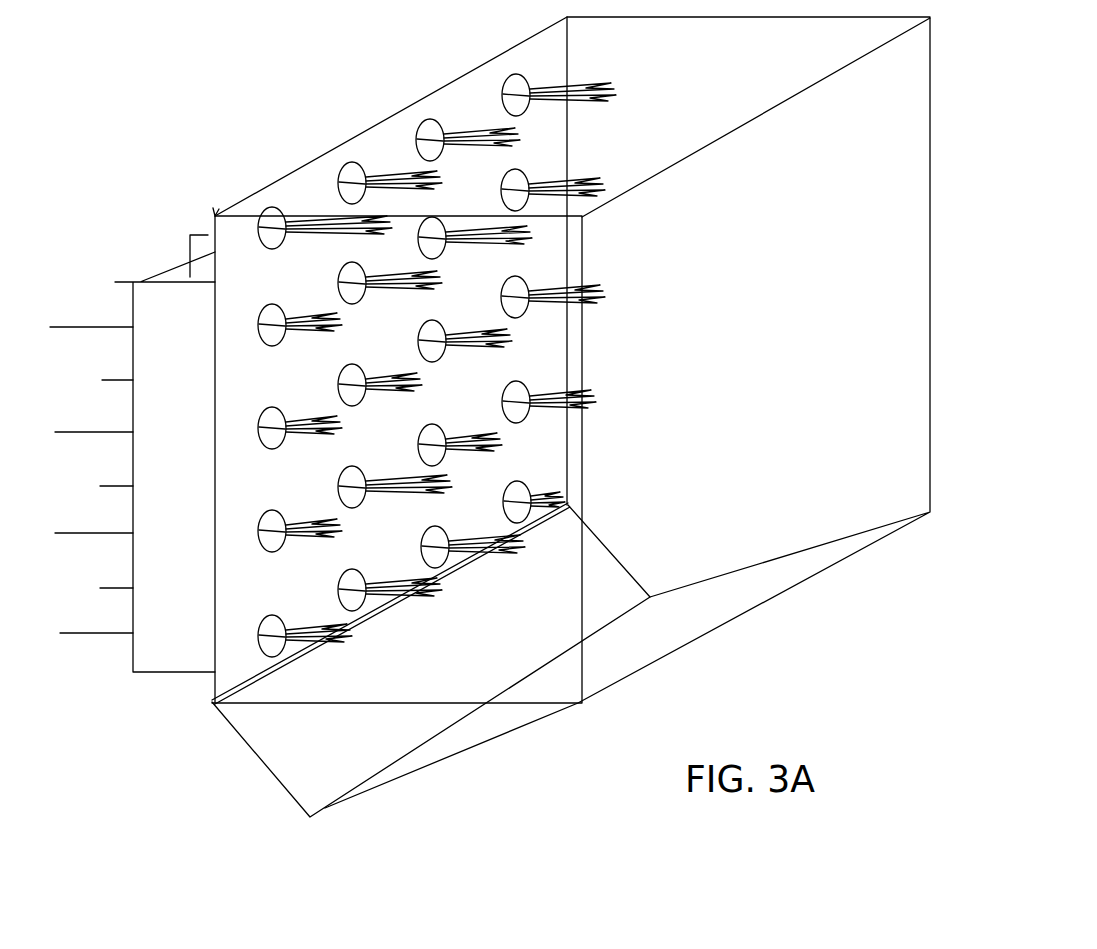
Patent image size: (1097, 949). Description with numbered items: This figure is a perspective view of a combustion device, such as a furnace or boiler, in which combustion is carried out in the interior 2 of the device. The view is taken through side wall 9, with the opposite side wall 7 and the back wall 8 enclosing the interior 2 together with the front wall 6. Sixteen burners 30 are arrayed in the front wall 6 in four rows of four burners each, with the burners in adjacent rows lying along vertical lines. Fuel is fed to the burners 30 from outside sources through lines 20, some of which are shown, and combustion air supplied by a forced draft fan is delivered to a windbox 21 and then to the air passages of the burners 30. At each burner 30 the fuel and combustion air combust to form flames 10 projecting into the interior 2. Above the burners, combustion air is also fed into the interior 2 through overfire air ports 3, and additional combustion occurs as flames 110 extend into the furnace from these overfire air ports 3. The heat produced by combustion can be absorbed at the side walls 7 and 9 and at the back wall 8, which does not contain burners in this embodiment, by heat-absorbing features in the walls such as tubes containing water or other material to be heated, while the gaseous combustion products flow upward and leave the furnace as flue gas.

The interior 2 is at (505, 583).
The overfire air ports 3 is at (277, 213).
The front wall 6 is at (528, 78).
The side wall 7 is at (571, 117).
The back wall 8 is at (627, 412).
The side wall 9 is at (431, 660).
The flames 10 is at (535, 192).
The flames 110 is at (548, 90).
The lines 20 is at (77, 627).
The windbox 21 is at (165, 453).
The burners 30 is at (307, 272).